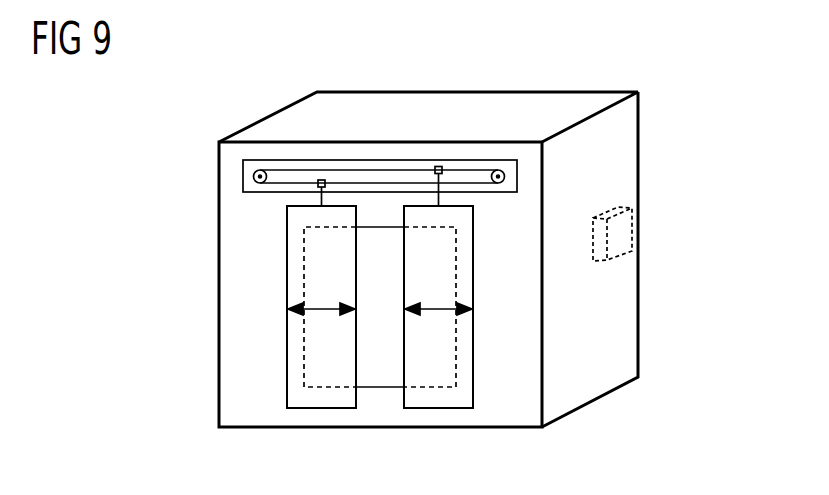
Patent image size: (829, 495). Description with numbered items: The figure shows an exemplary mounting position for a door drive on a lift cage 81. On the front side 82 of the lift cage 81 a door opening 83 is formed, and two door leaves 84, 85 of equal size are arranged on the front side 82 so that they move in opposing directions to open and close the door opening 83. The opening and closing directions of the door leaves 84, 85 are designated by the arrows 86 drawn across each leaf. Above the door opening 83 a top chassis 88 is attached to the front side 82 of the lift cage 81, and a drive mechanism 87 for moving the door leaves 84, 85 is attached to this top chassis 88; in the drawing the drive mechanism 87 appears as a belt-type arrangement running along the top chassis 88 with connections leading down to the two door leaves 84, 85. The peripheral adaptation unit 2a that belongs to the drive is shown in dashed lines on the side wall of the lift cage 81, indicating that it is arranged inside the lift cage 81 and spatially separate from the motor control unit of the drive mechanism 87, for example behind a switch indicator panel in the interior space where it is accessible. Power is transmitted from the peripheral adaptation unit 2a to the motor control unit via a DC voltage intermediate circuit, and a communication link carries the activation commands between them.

The lift cage 81 is at (638, 151).
The front side 82 is at (232, 229).
The door opening 83 is at (382, 388).
The door leaf 84 is at (473, 271).
The door leaf 85 is at (287, 271).
The opening and closing direction 86 is at (325, 310).
The drive mechanism 87 is at (341, 168).
The top chassis 88 is at (414, 158).
The peripheral adaptation unit 2a is at (632, 231).